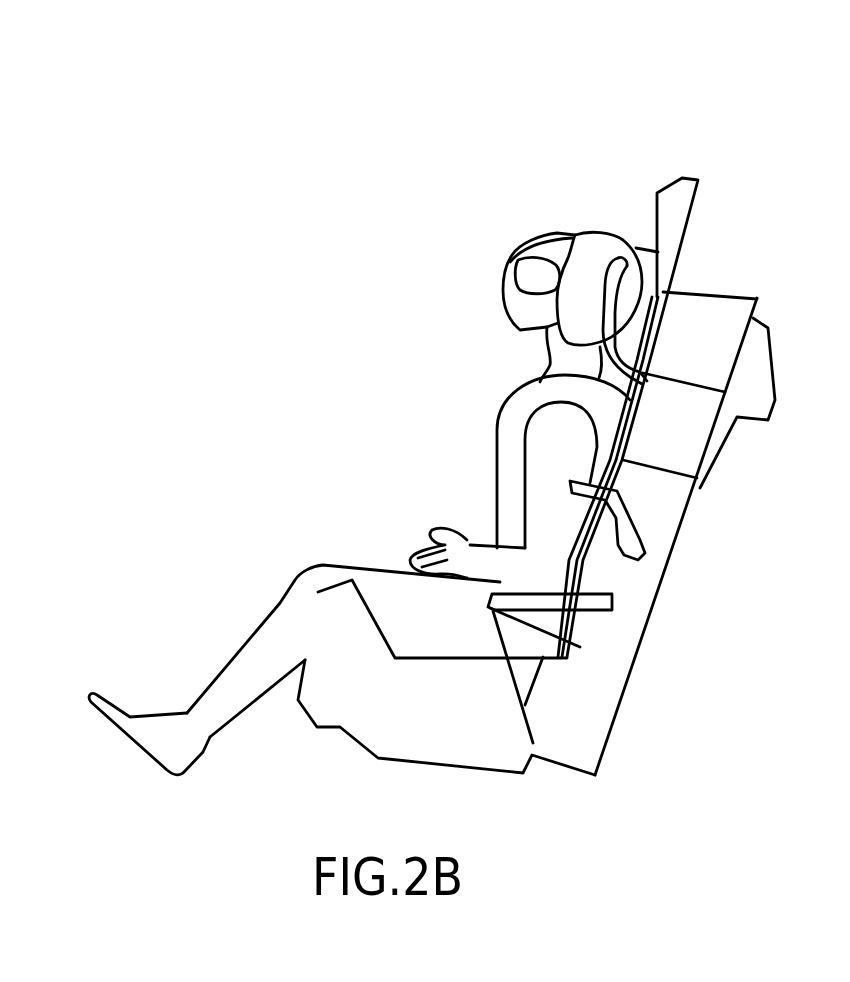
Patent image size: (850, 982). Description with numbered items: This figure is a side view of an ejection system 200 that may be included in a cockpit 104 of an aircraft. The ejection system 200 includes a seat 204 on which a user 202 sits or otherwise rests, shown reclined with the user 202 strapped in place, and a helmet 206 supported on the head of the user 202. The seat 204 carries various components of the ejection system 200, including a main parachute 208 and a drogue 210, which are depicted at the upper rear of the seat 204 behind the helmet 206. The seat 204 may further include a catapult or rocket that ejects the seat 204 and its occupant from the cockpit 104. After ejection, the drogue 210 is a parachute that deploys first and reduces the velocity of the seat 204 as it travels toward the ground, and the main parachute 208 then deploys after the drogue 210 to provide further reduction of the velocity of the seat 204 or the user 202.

The cockpit 104 is at (500, 157).
The ejection system 200 is at (704, 535).
The user 202 is at (481, 419).
The seat 204 is at (646, 630).
The helmet 206 is at (598, 250).
The main parachute 208 is at (736, 332).
The drogue 210 is at (760, 390).